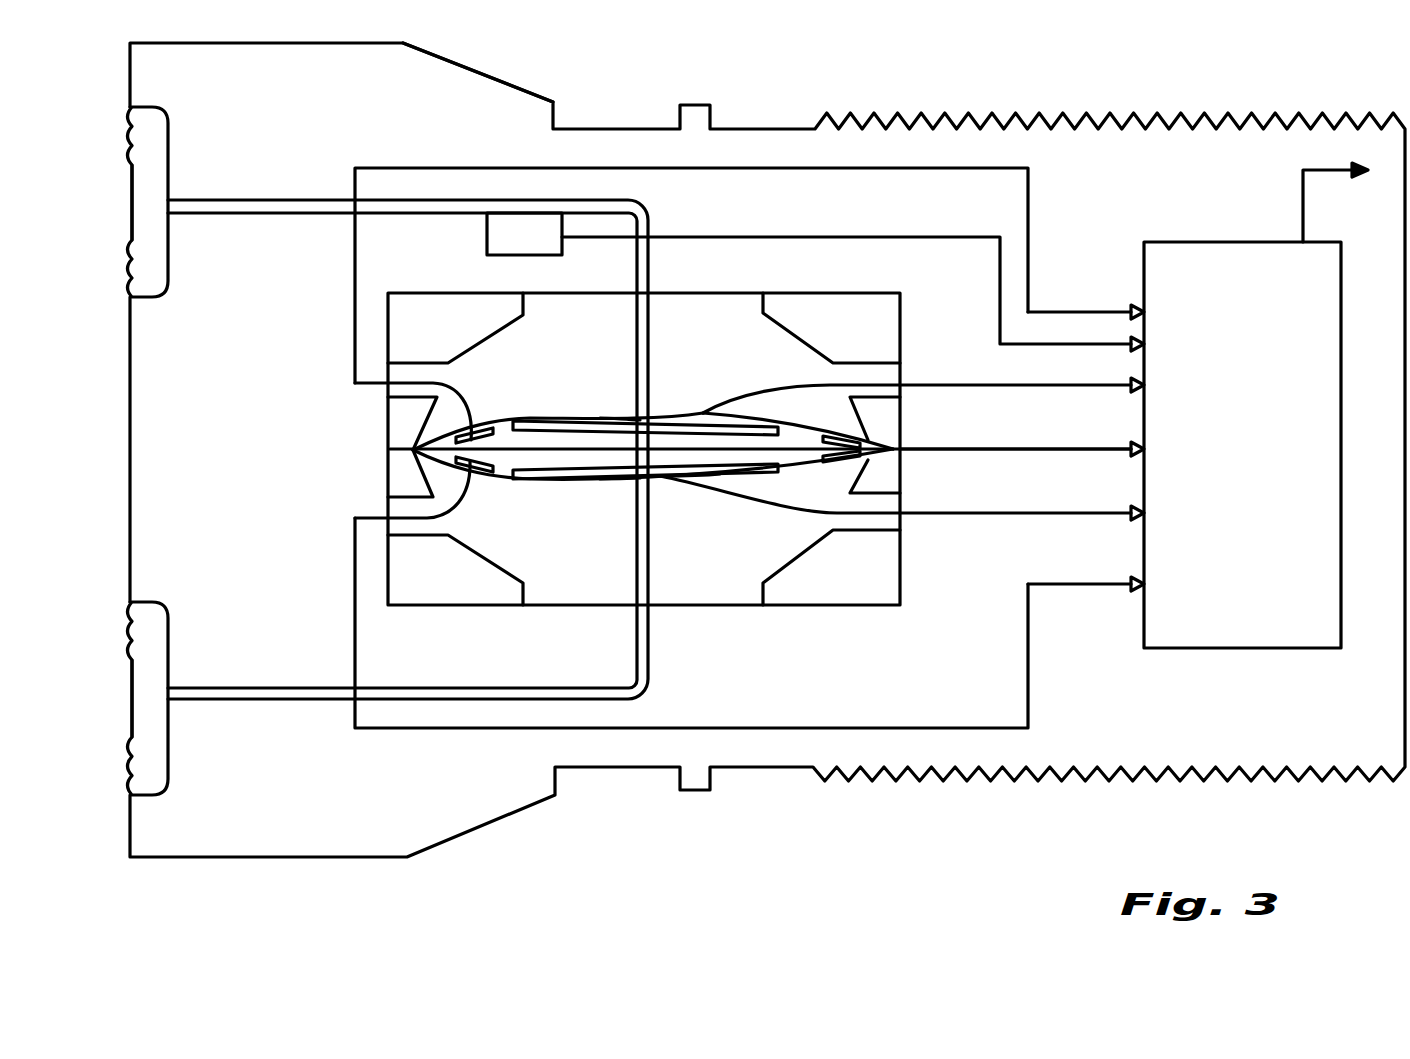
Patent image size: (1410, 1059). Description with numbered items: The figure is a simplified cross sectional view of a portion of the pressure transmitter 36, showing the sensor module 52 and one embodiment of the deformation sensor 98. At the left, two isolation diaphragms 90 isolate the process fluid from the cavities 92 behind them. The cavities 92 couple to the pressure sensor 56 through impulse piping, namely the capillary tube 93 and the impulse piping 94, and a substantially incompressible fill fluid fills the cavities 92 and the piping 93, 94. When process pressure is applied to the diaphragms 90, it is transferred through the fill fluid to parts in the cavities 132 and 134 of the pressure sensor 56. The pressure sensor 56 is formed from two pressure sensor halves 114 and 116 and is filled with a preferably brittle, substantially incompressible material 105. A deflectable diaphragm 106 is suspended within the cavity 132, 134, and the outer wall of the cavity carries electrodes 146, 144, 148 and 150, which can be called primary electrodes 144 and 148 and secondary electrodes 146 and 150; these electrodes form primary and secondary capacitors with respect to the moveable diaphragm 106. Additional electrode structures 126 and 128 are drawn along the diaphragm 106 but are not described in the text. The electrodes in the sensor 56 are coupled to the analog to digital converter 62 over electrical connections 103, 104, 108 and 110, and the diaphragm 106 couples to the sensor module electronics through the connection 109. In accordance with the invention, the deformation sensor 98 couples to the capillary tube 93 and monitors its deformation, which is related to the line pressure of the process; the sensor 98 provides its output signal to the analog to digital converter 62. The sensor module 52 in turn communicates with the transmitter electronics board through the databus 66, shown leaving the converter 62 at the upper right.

The pressure transmitter 36 is at (567, 784).
The sensor module 52 is at (479, 69).
The pressure sensor 56 is at (691, 448).
The analog to digital converter 62 is at (1344, 370).
The databus 66 is at (1330, 177).
The isolation diaphragm 90 is at (130, 202).
The cavity 92 is at (140, 135).
The capillary tube 93 is at (640, 273).
The impulse piping 94 is at (643, 663).
The deformation sensor 98 is at (487, 237).
The electrical connection 103 is at (1077, 308).
The electrical connection 104 is at (730, 410).
The incompressible material 105 is at (458, 388).
The diaphragm 106 is at (580, 478).
The electrical connection 108 is at (730, 500).
The connection 109 is at (990, 449).
The electrical connection 110 is at (435, 497).
The pressure sensor half 114 is at (900, 313).
The pressure sensor half 116 is at (903, 560).
The upper electrode 126 is at (513, 421).
The lower electrode 128 is at (488, 466).
The cavity 132 is at (650, 438).
The cavity 134 is at (675, 457).
The primary electrode 144 is at (627, 417).
The secondary electrode 146 is at (488, 432).
The primary electrode 148 is at (577, 480).
The secondary electrode 150 is at (480, 473).